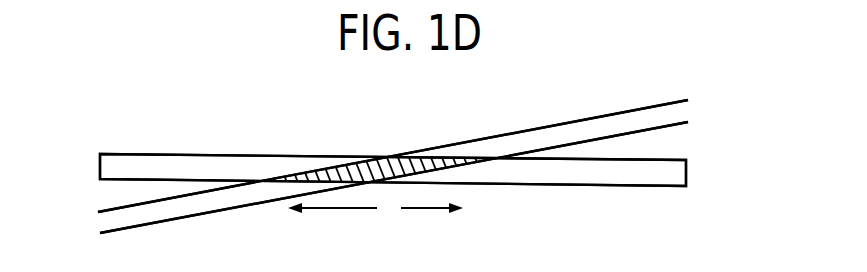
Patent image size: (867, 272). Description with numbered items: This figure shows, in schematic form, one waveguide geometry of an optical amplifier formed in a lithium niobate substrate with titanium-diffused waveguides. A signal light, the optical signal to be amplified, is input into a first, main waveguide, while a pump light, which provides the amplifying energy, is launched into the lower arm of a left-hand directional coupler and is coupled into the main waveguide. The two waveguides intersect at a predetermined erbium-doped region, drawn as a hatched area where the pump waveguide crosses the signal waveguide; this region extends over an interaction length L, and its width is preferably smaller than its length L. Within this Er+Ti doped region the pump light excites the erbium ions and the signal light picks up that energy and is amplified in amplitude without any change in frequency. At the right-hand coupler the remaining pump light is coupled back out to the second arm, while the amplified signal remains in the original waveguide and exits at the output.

The length of amplifying region L is at (375, 207).